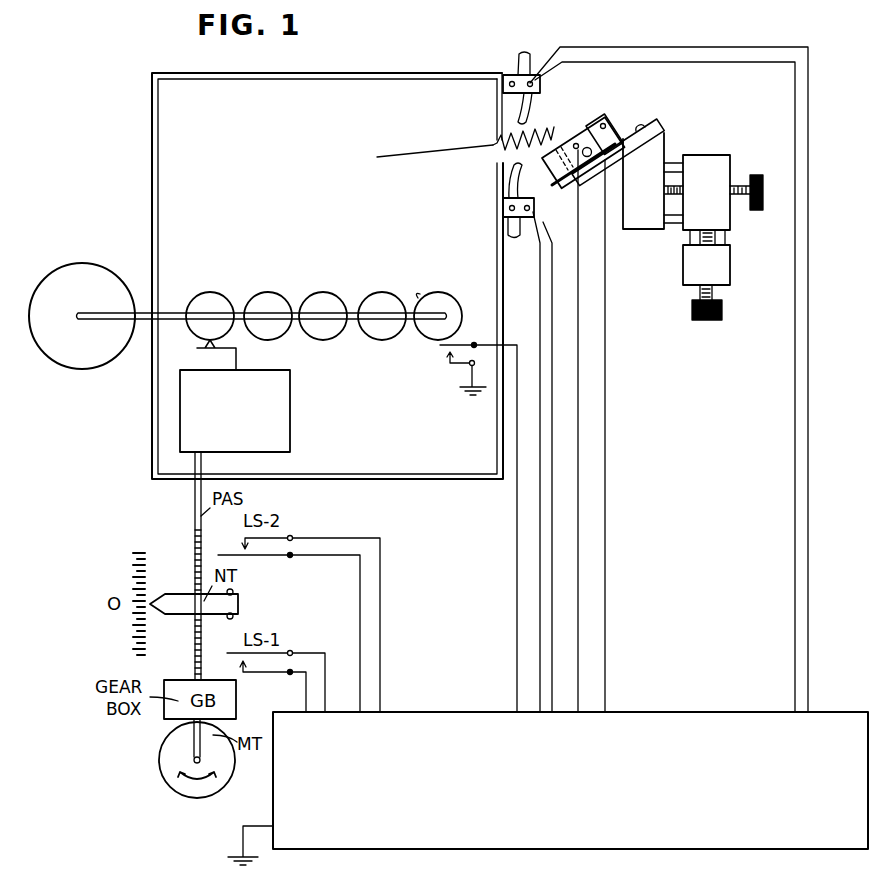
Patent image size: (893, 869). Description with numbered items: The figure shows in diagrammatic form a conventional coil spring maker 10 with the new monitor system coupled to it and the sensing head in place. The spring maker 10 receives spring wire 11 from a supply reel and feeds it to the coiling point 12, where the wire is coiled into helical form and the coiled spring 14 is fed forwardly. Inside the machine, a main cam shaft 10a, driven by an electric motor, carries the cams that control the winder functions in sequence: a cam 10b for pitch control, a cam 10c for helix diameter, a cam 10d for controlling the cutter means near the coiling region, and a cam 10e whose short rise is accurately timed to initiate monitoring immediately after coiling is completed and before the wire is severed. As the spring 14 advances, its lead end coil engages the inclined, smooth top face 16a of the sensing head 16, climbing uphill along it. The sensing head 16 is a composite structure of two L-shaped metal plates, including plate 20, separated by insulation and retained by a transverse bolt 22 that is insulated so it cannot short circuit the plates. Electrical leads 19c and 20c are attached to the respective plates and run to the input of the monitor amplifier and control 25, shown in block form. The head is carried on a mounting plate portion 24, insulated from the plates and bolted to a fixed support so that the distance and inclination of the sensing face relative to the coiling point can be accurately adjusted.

The coil spring maker 10 is at (344, 155).
The main cam shaft 10a is at (238, 316).
The cam for pitch control 10b is at (198, 322).
The cam for helix diameter 10c is at (270, 333).
The cam for controlling cutter means 10d is at (334, 330).
The cam 10e is at (437, 330).
The spring wire 11 is at (403, 154).
The coiling point 12 is at (495, 142).
The spring 14 is at (533, 130).
The sensing head 16 is at (547, 185).
The top face 16a is at (559, 147).
The electrical lead 19c is at (578, 385).
The L-shaped metal plate 20 is at (613, 162).
The electrical lead 20c is at (605, 413).
The transverse bolt 22 is at (589, 157).
The mounting plate portion 24 is at (660, 132).
The monitor amplifier and control 25 is at (557, 790).